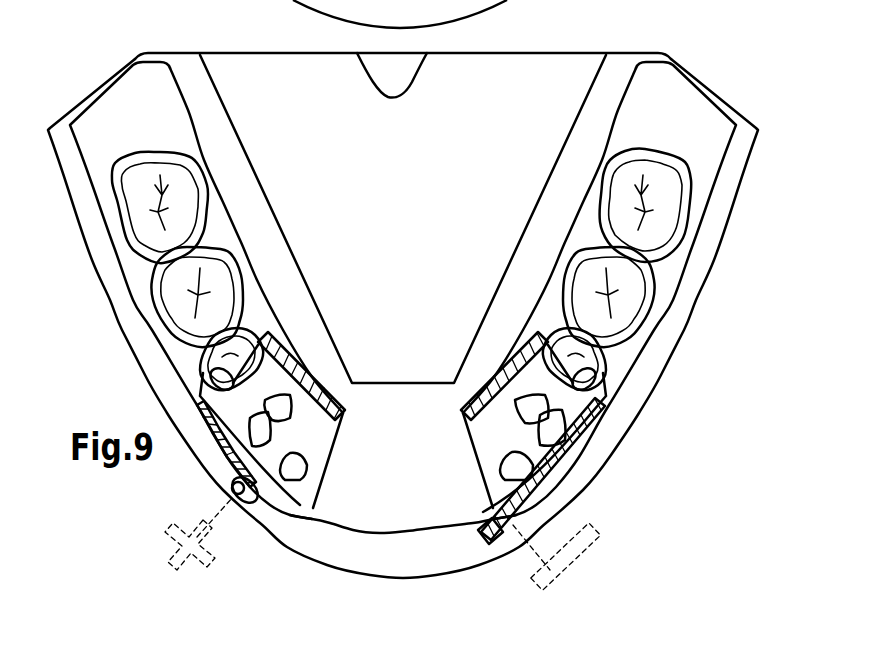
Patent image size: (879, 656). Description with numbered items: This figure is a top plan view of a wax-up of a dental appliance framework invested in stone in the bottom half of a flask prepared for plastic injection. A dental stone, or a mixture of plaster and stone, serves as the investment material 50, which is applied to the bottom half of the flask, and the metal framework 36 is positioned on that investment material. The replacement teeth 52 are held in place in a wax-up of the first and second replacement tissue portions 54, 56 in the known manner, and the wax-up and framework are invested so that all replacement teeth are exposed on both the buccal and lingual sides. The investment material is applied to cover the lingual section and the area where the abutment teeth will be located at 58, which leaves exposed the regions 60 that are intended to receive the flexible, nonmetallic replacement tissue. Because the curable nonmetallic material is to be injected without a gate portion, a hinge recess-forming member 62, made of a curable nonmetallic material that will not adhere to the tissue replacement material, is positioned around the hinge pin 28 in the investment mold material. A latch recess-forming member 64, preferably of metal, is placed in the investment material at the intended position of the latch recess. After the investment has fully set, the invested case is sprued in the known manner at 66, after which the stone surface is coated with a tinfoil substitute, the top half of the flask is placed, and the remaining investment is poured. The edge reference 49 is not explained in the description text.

The hinge pin 28 is at (548, 492).
The metal framework 36 is at (307, 413).
The tray top edge 49 is at (590, 53).
The investment material 50 is at (270, 257).
The replacement teeth 52 is at (177, 190).
The first replacement tissue portion 54 is at (693, 115).
The second replacement tissue portion 56 is at (133, 100).
The area where the abutment teeth will be located 58 is at (408, 473).
The regions intended to receive flexible nonmetallic replacement tissue 60 is at (127, 302).
The hinge recess-forming member 62 is at (495, 535).
The latch recess-forming member 64 is at (262, 500).
The sprue location 66 is at (397, 76).